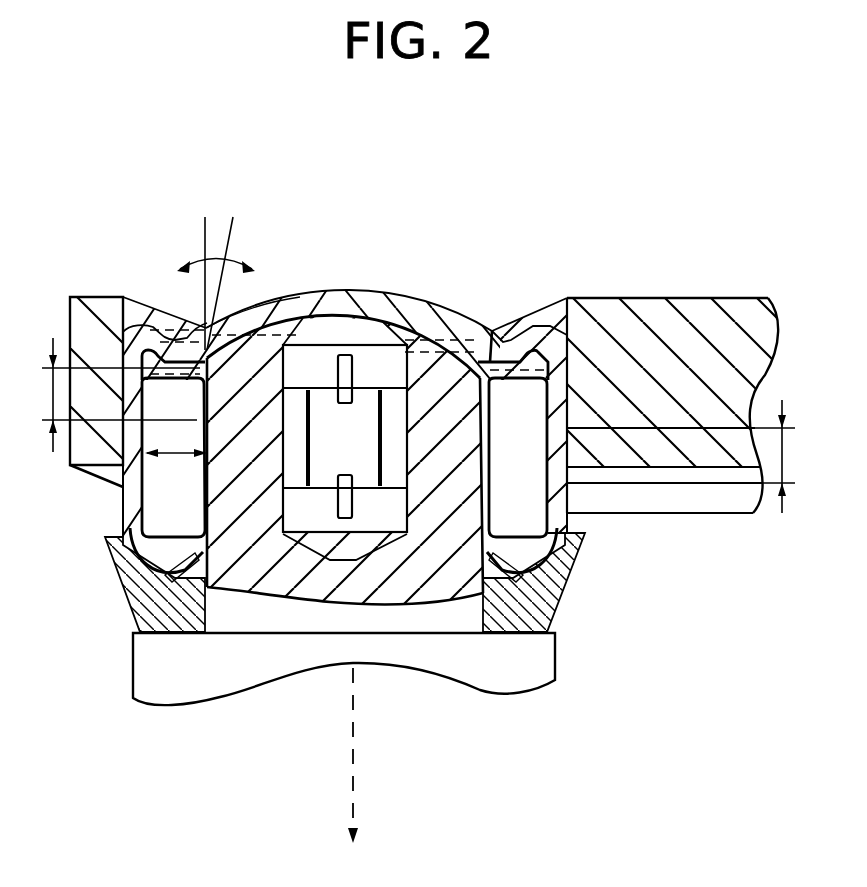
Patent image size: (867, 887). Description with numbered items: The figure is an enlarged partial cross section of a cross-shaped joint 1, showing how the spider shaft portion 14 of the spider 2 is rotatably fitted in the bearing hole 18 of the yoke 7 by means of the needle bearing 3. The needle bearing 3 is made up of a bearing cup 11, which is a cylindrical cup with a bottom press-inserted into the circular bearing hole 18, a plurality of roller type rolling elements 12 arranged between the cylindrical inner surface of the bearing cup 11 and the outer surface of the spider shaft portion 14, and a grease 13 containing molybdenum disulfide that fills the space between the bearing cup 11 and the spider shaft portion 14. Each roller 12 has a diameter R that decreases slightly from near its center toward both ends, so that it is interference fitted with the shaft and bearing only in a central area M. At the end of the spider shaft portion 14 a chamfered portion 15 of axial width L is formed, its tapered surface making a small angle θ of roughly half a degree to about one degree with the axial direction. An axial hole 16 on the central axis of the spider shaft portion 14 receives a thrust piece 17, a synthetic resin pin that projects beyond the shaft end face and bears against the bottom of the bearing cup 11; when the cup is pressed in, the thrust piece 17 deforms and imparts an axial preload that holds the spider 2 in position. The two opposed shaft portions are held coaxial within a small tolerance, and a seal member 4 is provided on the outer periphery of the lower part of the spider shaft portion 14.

The ball joint assembly 1 is at (332, 257).
The spider 2 is at (428, 327).
The needle bearing 3 is at (286, 296).
The seal member 4 is at (123, 570).
The yoke 7 is at (638, 310).
The bearing cup 11 is at (358, 302).
The roller type rolling element 12 is at (163, 480).
The grease 13 is at (269, 298).
The spider shaft portion 14 is at (145, 548).
The chamfered portion 15 is at (494, 356).
The axial hole 16 is at (283, 507).
The thrust piece 17 is at (370, 517).
The bearing hole 18 is at (552, 315).